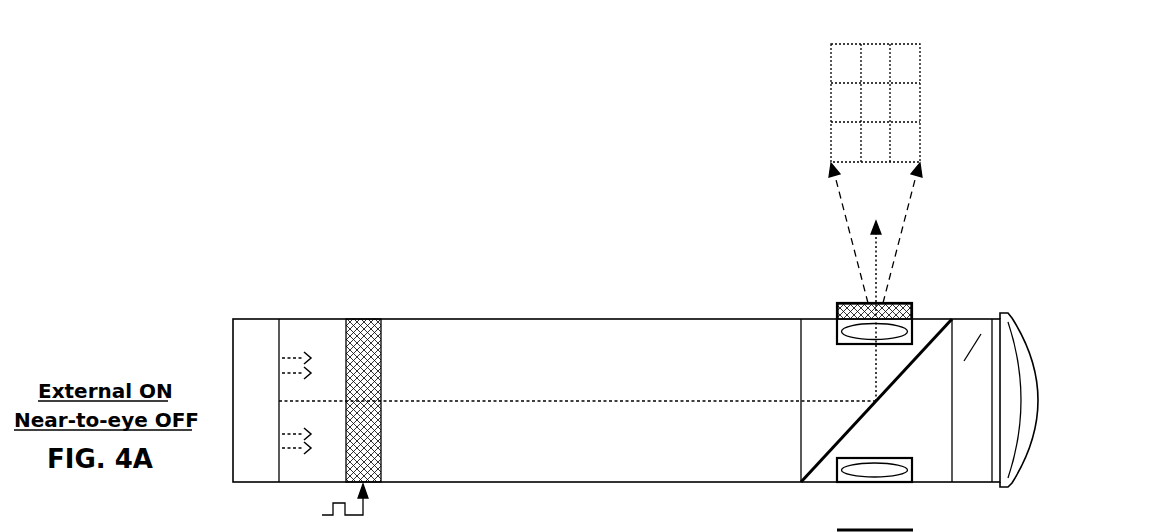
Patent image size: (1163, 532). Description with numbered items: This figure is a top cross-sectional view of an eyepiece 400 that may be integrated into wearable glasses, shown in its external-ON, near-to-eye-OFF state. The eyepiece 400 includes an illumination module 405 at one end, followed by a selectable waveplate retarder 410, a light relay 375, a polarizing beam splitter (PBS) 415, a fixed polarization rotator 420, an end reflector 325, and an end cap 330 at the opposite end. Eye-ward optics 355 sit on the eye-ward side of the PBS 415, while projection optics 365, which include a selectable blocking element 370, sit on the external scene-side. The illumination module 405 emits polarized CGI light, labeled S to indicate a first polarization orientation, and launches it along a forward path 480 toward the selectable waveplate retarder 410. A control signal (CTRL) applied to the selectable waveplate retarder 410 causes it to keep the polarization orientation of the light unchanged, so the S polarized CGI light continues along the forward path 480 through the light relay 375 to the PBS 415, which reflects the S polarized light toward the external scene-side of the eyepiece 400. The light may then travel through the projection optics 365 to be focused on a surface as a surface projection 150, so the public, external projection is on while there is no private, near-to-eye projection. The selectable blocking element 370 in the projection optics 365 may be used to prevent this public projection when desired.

The surface projection 150 is at (938, 77).
The end reflector 325 is at (1023, 420).
The end cap 330 is at (1025, 353).
The eye-ward optics 355 is at (837, 478).
The projection optics 365 is at (838, 332).
The selectable blocking element 370 is at (840, 303).
The light relay 375 is at (490, 318).
The eyepiece 400 is at (568, 294).
The illumination module 405 is at (248, 318).
The selectable waveplate retarder 410 is at (362, 318).
The polarizing beam splitter 415 is at (945, 318).
The fixed polarization rotator 420 is at (976, 318).
The forward path 480 is at (528, 402).